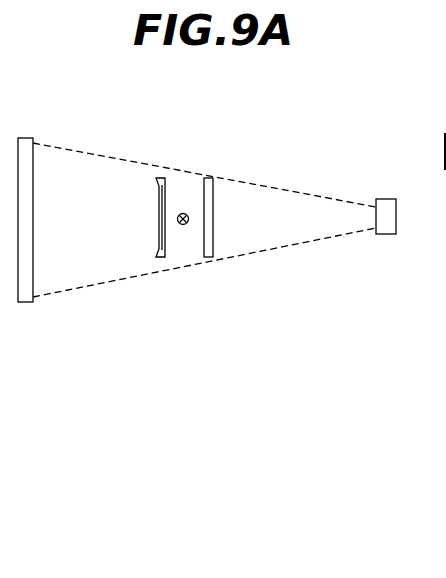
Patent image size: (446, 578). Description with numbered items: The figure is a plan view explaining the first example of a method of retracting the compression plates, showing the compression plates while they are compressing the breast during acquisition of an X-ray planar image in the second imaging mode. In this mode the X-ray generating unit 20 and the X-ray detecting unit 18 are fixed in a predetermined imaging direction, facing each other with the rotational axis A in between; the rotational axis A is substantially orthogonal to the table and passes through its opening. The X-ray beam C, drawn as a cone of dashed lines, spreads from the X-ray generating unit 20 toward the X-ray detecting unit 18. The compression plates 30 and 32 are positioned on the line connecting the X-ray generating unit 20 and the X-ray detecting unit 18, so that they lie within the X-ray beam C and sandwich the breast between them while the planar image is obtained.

The X-ray detecting unit 18 is at (33, 283).
The compression plate 32 is at (162, 178).
The compression plate 30 is at (213, 186).
The X-ray generating unit 20 is at (387, 227).
The rotational axis A is at (187, 223).
The X-ray beam C is at (318, 239).